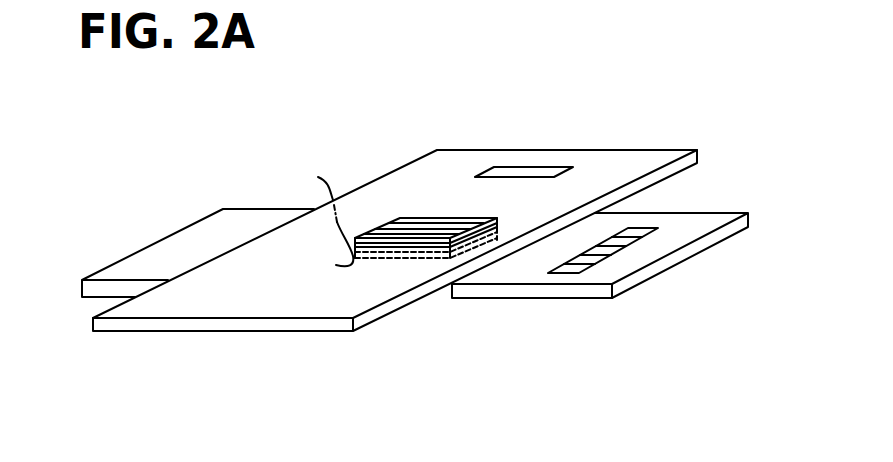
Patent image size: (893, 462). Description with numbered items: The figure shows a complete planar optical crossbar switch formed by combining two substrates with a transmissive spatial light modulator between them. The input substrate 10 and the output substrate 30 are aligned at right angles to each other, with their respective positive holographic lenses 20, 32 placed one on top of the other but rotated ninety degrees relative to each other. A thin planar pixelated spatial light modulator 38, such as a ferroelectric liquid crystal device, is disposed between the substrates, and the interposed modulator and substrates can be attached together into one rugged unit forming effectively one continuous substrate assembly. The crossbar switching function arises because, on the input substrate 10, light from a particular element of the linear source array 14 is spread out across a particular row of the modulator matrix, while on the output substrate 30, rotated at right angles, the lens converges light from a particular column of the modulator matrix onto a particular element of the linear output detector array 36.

The input substrate 10 is at (382, 315).
The linear source array 14 is at (535, 162).
The positive holographic lens 20 is at (390, 222).
The positive holographic lens 32 is at (327, 260).
The spatial light modulator 38 is at (314, 214).
The output substrate 30 is at (625, 285).
The linear output detector array 36 is at (653, 223).